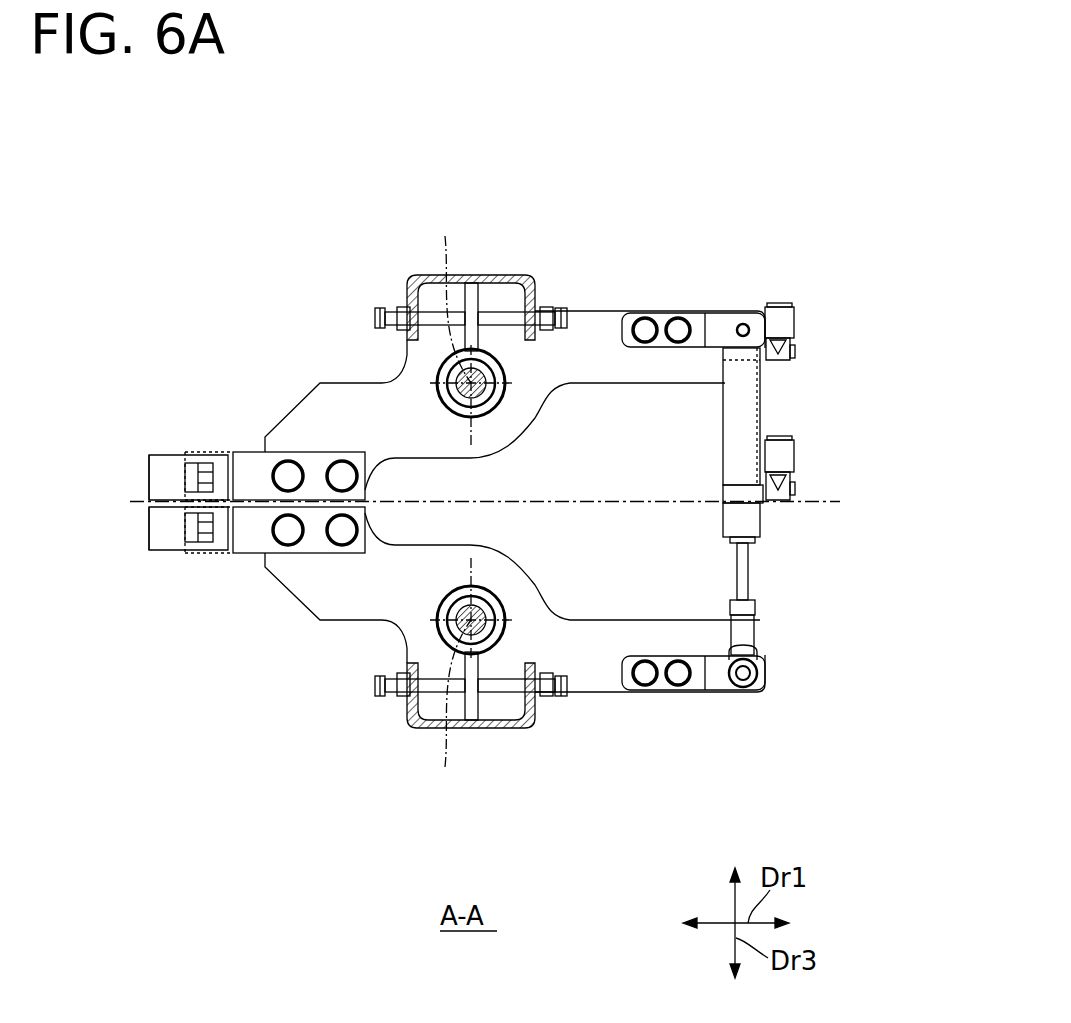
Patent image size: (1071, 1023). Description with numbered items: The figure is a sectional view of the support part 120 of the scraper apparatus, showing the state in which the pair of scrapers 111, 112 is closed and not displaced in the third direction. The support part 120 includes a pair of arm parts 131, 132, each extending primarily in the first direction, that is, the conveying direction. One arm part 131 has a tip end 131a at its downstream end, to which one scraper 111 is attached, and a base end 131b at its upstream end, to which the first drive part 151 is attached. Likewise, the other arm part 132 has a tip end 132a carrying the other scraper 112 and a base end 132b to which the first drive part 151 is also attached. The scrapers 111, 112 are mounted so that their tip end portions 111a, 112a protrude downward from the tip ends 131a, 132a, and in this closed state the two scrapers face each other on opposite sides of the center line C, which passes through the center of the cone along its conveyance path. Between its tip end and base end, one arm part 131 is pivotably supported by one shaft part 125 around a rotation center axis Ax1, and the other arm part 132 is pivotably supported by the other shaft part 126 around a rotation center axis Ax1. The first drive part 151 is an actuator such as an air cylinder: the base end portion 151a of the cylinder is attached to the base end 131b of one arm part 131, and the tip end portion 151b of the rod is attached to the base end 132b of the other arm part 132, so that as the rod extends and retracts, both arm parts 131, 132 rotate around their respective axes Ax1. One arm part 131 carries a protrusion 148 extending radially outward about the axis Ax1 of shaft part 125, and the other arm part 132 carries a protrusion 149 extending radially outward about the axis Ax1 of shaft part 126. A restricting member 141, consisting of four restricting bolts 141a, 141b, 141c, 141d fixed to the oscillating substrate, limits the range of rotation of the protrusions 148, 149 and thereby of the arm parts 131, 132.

The support part 120 is at (860, 178).
The one scraper 111 is at (174, 466).
The tip end portion of one scraper 111a is at (156, 456).
The other scraper 112 is at (174, 540).
The tip end portion of other scraper 112a is at (156, 548).
The one shaft part 125 is at (513, 278).
The other shaft part 126 is at (512, 725).
The one arm part 131 is at (348, 392).
The tip end of one arm part 131a is at (293, 428).
The base end of one arm part 131b is at (690, 310).
The other arm part 132 is at (348, 612).
The tip end of other arm part 132a is at (293, 578).
The base end of other arm part 132b is at (697, 694).
The restricting member 141 is at (484, 506).
The restricting bolt 141a is at (384, 306).
The restricting bolt 141b is at (557, 305).
The restricting bolt 141c is at (386, 698).
The restricting bolt 141d is at (557, 698).
The one protrusion 148 is at (470, 320).
The other protrusion 149 is at (475, 665).
The first drive part 151 is at (752, 408).
The base end portion of the cylinder 151a is at (745, 323).
The tip end portion of the rod 151b is at (758, 673).
The rotation center axis Ax1 is at (443, 502).
The center line C is at (812, 500).